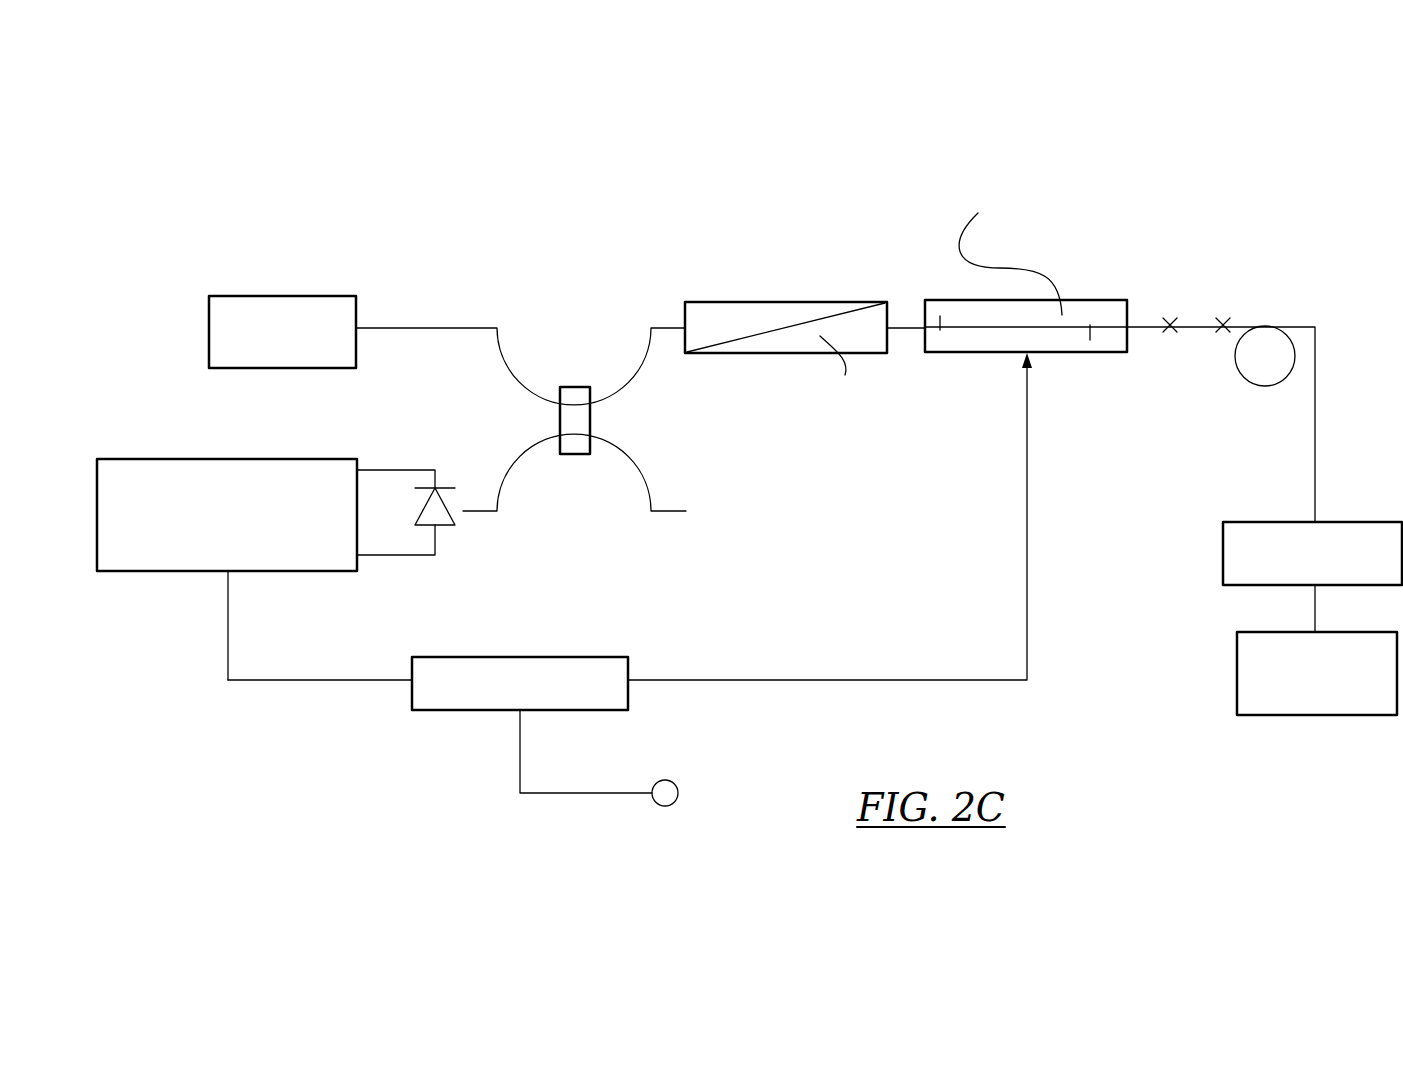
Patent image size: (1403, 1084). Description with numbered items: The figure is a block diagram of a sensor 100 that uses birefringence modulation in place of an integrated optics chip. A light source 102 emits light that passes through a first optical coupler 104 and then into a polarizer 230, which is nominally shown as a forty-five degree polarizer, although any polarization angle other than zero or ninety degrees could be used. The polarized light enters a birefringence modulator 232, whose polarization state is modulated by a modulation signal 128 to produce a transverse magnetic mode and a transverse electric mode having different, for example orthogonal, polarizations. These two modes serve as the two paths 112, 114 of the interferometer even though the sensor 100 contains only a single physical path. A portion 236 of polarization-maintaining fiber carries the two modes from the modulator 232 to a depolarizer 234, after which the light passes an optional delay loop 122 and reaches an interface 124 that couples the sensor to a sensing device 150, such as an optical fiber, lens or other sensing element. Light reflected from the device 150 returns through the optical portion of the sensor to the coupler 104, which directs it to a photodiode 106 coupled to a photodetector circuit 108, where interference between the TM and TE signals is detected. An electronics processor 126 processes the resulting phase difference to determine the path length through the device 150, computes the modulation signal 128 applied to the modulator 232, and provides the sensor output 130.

The sensor 100 is at (1228, 198).
The light source 102 is at (332, 306).
The first optical coupler 104 is at (575, 387).
The photodiode 106 is at (437, 490).
The photodetector circuit 108 is at (175, 476).
The first light path 112 is at (968, 330).
The second light path 114 is at (1090, 325).
The delay loop 122 is at (1258, 370).
The interface 124 is at (1235, 563).
The electronics processor 126 is at (494, 665).
The modulation signal 128 is at (1027, 603).
The sensor output 130 is at (672, 781).
The sensing device 150 is at (1243, 663).
The polarizer 230 is at (742, 317).
The birefringence modulator 232 is at (940, 316).
The depolarizer 234 is at (1192, 330).
The portion of polarization-maintaining fiber 236 is at (1142, 325).